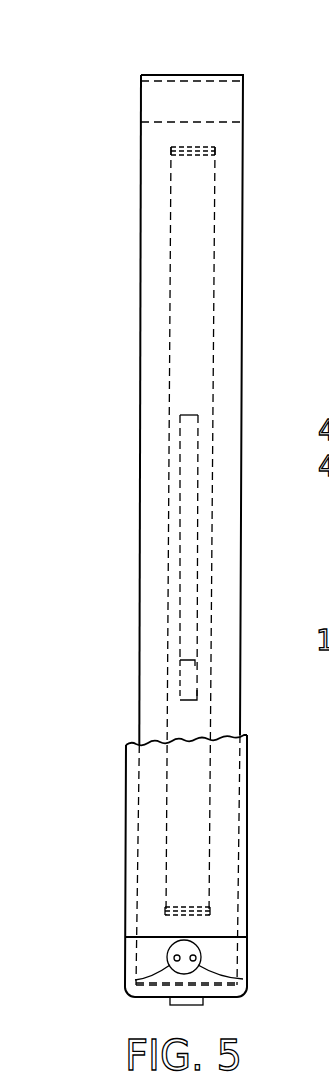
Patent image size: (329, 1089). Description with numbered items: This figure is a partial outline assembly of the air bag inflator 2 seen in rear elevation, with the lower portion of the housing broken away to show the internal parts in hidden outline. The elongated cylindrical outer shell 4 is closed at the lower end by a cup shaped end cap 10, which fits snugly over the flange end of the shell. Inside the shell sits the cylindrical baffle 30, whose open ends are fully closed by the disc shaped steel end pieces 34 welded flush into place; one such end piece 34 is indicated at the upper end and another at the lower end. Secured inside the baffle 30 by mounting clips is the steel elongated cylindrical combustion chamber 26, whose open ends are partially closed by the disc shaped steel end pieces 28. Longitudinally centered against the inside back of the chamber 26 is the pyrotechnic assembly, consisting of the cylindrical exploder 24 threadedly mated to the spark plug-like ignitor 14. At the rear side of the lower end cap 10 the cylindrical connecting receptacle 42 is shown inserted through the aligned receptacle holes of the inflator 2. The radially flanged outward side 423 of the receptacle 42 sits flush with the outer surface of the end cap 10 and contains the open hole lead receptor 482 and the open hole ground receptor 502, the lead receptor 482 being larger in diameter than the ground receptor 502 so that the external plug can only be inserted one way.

The air bag inflator 2 is at (110, 815).
The outer shell 4 is at (122, 768).
The end cap 10 is at (237, 1003).
The ignitor 14 is at (178, 680).
The exploder 24 is at (178, 522).
The combustion chamber 26 is at (165, 295).
The end piece 28 is at (182, 157).
The baffle 30 is at (131, 228).
The end piece 34 is at (219, 73).
The connecting receptacle 42 is at (207, 952).
The outward side 423 is at (170, 952).
The lead receptor 482 is at (137, 980).
The ground receptor 502 is at (243, 979).